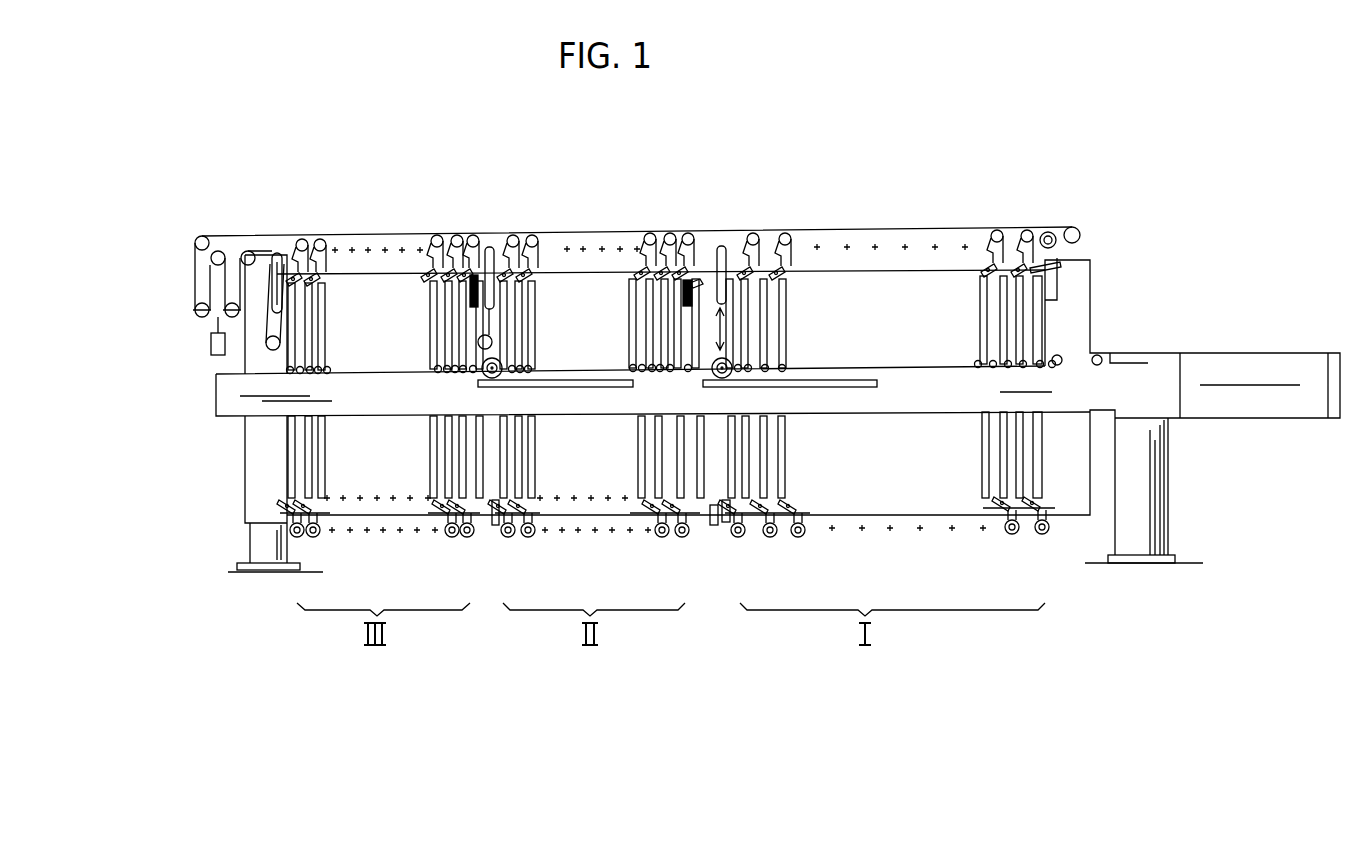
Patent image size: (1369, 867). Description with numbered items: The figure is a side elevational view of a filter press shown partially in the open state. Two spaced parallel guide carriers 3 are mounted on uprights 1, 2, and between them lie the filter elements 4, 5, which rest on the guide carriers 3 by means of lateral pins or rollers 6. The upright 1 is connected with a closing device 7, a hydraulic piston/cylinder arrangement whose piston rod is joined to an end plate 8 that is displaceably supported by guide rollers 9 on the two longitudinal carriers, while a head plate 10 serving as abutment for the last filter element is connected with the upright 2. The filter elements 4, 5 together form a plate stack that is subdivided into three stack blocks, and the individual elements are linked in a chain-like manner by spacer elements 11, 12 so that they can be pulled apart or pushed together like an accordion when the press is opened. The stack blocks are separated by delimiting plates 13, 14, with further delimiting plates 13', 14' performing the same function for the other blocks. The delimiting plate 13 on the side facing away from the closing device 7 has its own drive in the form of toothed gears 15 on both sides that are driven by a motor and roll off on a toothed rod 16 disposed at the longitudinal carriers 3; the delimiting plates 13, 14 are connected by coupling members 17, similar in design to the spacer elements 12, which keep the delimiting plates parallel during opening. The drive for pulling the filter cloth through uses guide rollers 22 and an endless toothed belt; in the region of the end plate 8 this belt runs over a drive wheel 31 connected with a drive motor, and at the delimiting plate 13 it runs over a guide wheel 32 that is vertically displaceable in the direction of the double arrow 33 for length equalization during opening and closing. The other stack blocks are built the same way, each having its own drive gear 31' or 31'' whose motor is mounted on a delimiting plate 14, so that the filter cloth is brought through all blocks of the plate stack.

The upright 1 is at (1153, 483).
The upright 2 is at (255, 490).
The guide carrier 3 is at (1124, 401).
The filter element 4 is at (1000, 300).
The filter element 5 is at (1016, 325).
The lateral pin or roller 6 is at (1040, 362).
The closing device 7 is at (1273, 392).
The end plate 8 is at (1073, 505).
The guide roller 9 is at (1097, 366).
The head plate 10 is at (255, 452).
The spacer element 11 is at (1060, 264).
The spacer element 12 is at (1015, 245).
The delimiting plate 13 is at (761, 535).
The delimiting plate 13' is at (514, 536).
The delimiting plate 14 is at (667, 535).
The delimiting plate 14' is at (457, 536).
The toothed gear 15 is at (482, 372).
The toothed rod 16 is at (703, 382).
The coupling member 17 is at (490, 248).
The guide roller 22 is at (993, 231).
The drive wheel 31 is at (1050, 213).
The drive gear 31' is at (664, 229).
The drive gear 31'' is at (450, 230).
The guide wheel 32 is at (478, 342).
The double arrow 33 is at (724, 327).